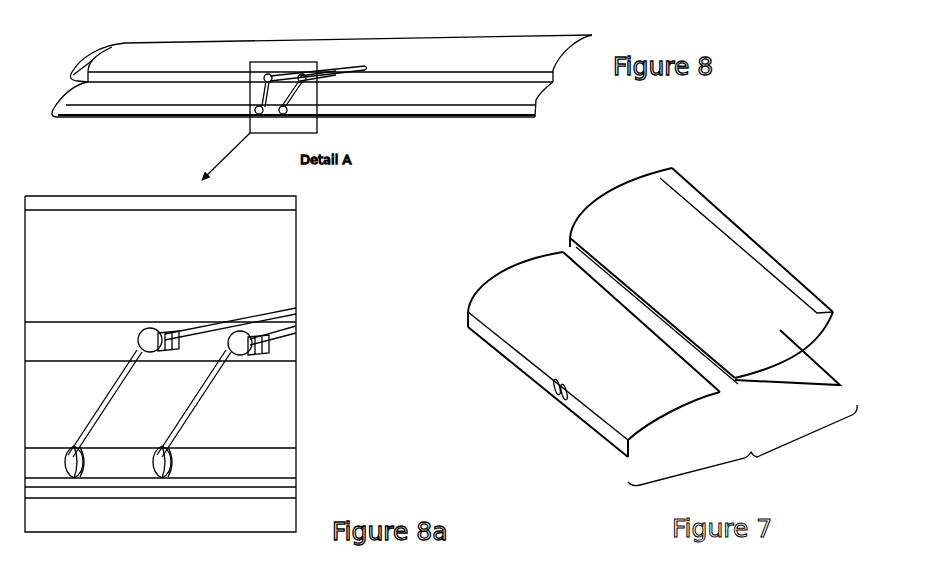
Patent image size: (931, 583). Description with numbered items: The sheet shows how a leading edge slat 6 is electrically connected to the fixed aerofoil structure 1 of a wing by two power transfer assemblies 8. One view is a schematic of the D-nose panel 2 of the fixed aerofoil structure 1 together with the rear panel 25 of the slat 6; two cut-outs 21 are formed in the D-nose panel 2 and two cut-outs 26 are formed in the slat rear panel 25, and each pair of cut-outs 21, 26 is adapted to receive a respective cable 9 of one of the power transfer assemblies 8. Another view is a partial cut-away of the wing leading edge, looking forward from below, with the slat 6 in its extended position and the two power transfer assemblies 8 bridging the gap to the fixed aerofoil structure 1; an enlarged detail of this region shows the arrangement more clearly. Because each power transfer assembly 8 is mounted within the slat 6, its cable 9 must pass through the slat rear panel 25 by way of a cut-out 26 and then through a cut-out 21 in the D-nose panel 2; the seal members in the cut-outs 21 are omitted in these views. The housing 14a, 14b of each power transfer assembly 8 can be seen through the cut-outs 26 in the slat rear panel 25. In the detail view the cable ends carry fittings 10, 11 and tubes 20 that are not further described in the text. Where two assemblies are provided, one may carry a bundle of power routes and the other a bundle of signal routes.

In FIG. 8, the fixed aerofoil structure 1 is at (120, 54).
In FIG. 7, the fixed aerofoil structure 1 is at (732, 175).
In FIG. 8, the D-nose panel 2 is at (164, 50).
In FIG. 8A, the D-nose panel 2 is at (37, 288).
In FIG. 7, the D-nose panel 2 is at (762, 282).
In FIG. 8, the slat 6 is at (58, 108).
In FIG. 7, the slat 6 is at (550, 426).
In FIG. 8, the power transfer assembly 8 is at (282, 124).
In FIG. 8A, the cable 9 is at (90, 443).
In FIG. 8A, the pivot connector 10 is at (140, 346).
In FIG. 8A, the nut 11 is at (165, 333).
In FIG. 8A, the housing 14a is at (66, 474).
In FIG. 8A, the housing 14b is at (82, 478).
In FIG. 8A, the tube 20 is at (298, 306).
In FIG. 8A, the cut-out 21 is at (150, 368).
In FIG. 7, the cut-out 21 is at (666, 318).
In FIG. 8, the rear panel 25 is at (96, 100).
In FIG. 8A, the rear panel 25 is at (40, 418).
In FIG. 7, the rear panel 25 is at (627, 403).
In FIG. 8A, the cut-out 26 is at (56, 459).
In FIG. 7, the cut-out 26 is at (566, 392).